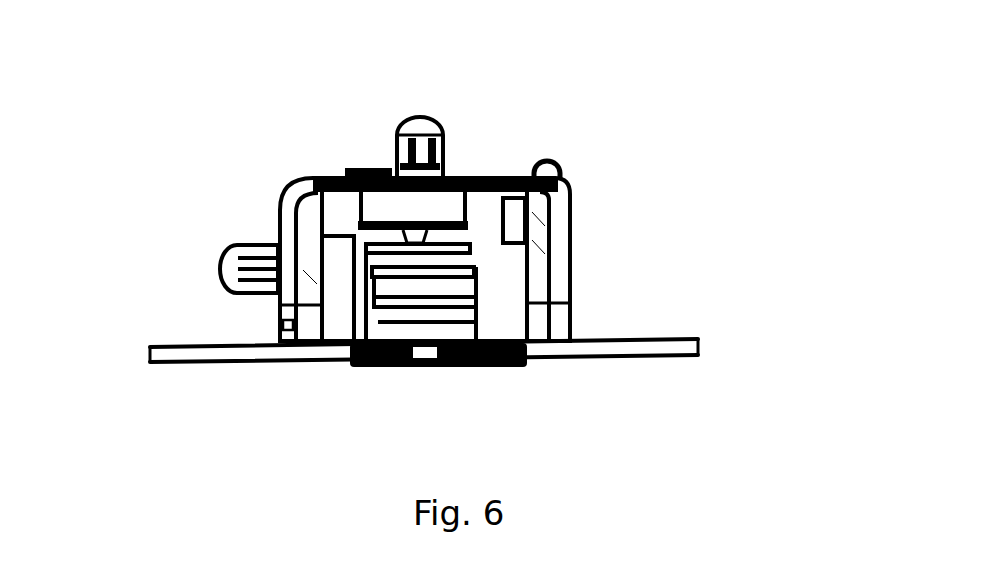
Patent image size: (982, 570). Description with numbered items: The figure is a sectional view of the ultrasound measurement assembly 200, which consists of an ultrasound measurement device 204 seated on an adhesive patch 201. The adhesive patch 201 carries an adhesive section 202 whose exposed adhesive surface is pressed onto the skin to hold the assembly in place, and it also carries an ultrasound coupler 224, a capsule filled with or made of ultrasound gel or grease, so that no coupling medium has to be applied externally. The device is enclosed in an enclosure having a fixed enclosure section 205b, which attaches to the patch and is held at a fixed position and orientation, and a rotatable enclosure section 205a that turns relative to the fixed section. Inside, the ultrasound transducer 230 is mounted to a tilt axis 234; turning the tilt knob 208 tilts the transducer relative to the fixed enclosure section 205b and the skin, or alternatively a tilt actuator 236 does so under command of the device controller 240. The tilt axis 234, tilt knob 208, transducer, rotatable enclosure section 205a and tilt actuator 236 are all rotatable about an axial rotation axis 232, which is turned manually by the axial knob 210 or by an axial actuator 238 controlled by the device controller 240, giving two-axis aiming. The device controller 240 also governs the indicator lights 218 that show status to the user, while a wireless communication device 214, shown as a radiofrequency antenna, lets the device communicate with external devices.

The ultrasound measurement assembly 200 is at (729, 81).
The adhesive patch 201 is at (139, 318).
The adhesive section 202 is at (650, 355).
The ultrasound measurement device 204 is at (237, 176).
The rotatable enclosure section 205a is at (572, 268).
The fixed enclosure section 205b is at (572, 320).
The tilt knob 208 is at (217, 268).
The axial knob 210 is at (418, 118).
The wireless communication device 214 is at (487, 177).
The indicator lights 218 is at (556, 163).
The ultrasound coupler 224 is at (457, 363).
The ultrasound transducer 230 is at (350, 345).
The axial rotation axis 232 is at (342, 172).
The tilt axis 234 is at (360, 302).
The tilt actuator 236 is at (337, 273).
The axial actuator 238 is at (402, 207).
The device controller 240 is at (517, 200).